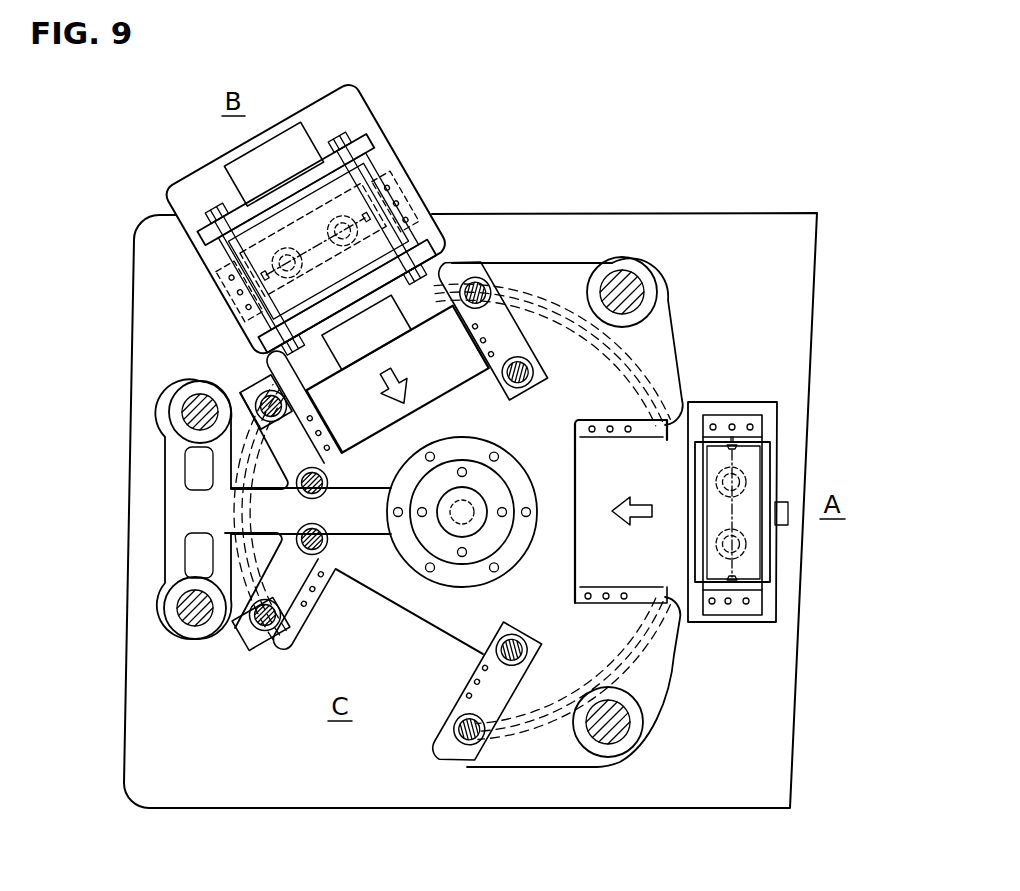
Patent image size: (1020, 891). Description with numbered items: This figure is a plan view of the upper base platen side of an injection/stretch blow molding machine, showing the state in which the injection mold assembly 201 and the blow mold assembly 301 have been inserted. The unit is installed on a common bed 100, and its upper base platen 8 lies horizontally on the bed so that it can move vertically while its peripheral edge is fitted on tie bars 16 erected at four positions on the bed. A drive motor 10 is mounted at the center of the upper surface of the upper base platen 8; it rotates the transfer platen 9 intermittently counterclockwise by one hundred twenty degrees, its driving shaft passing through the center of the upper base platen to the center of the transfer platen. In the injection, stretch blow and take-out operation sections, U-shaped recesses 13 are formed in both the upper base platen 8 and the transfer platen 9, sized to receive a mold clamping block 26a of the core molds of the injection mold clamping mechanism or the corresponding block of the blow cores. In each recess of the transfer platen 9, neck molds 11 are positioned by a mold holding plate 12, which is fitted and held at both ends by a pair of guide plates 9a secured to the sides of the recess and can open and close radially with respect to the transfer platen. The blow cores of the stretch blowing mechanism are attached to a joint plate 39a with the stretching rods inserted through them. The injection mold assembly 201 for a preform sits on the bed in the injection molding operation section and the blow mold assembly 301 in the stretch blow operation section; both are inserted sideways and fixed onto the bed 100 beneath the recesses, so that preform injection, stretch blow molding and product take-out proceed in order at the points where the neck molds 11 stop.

The upper base platen 8 is at (540, 337).
The transfer platen 9 is at (590, 375).
The guide plates 9a is at (232, 330).
The drive motor 10 is at (492, 535).
The neck molds 11 is at (270, 233).
The mold holding plate 12 is at (420, 192).
The U-shaped recesses 13 is at (360, 425).
The tie bars 16 is at (620, 288).
The mold clamping block 26a is at (748, 567).
The joint plate 39a is at (262, 258).
The common bed 100 is at (730, 214).
The injection mold assembly 201 is at (780, 566).
The blow mold assembly 301 is at (385, 157).